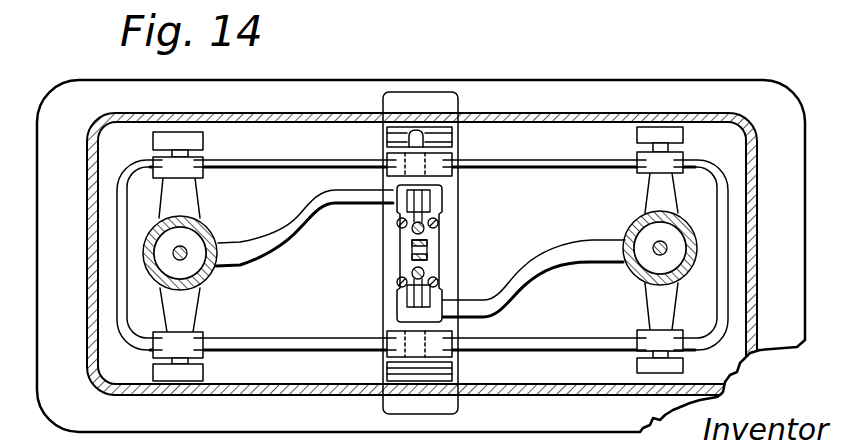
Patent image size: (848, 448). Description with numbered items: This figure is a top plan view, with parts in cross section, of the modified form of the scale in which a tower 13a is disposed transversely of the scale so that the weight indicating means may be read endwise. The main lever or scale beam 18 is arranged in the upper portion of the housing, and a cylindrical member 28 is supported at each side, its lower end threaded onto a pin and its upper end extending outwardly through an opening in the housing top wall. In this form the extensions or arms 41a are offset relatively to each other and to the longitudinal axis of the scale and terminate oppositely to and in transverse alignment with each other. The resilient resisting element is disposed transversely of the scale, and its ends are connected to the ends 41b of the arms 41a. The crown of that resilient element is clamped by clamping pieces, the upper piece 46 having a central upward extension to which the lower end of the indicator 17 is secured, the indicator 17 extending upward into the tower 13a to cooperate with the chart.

The tower 13a is at (441, 91).
The main lever or scale beam 18 is at (588, 170).
The cylindrical member 28 is at (211, 285).
The extensions or arms 41a is at (296, 234).
The ends of arms 41b is at (441, 200).
The upper clamping piece 46 is at (423, 257).
The indicator 17 is at (440, 251).